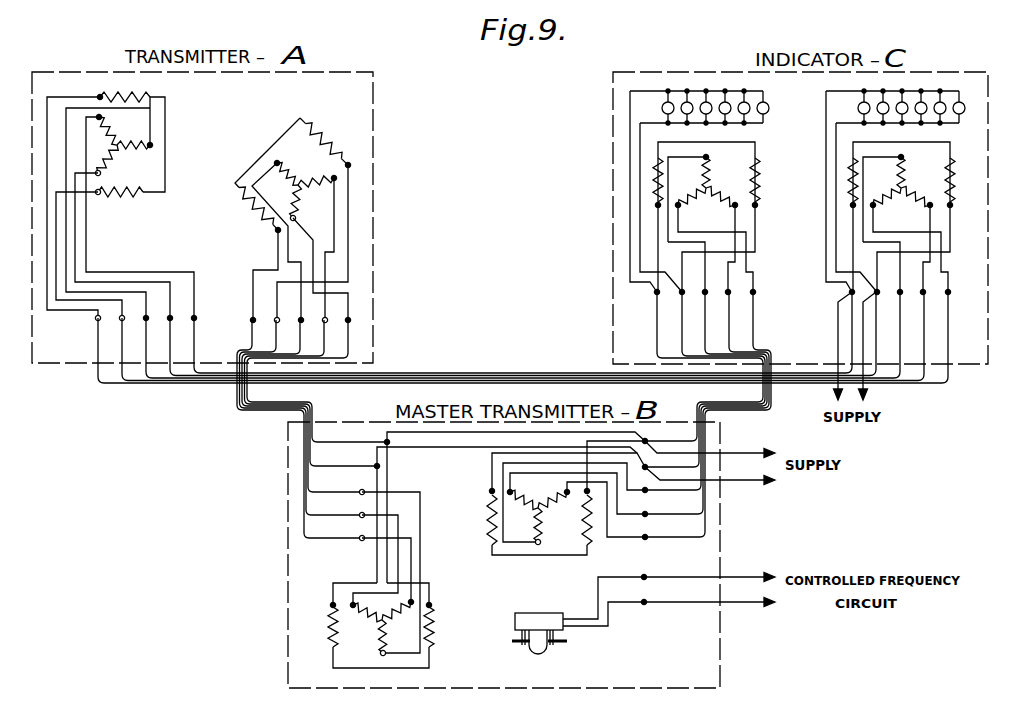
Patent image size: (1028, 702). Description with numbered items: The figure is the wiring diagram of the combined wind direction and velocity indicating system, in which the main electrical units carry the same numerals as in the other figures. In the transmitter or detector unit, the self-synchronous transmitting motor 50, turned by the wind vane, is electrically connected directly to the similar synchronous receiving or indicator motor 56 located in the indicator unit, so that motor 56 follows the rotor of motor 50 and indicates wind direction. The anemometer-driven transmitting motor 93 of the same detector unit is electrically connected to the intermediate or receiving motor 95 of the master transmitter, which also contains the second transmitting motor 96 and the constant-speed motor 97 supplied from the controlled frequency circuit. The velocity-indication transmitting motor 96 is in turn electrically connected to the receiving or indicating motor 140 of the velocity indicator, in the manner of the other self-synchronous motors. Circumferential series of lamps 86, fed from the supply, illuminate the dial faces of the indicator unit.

The self-synchronous transmitting motor 50 is at (168, 92).
The transmitting motor 93 is at (303, 113).
The lamps 86 is at (769, 108).
The receiving or indicating motor 140 is at (766, 138).
The synchronous receiving or indicator motor 56 is at (961, 138).
The second transmitting motor 96 is at (481, 453).
The receiving motor 95 is at (437, 578).
The constant-speed motor 97 is at (571, 655).